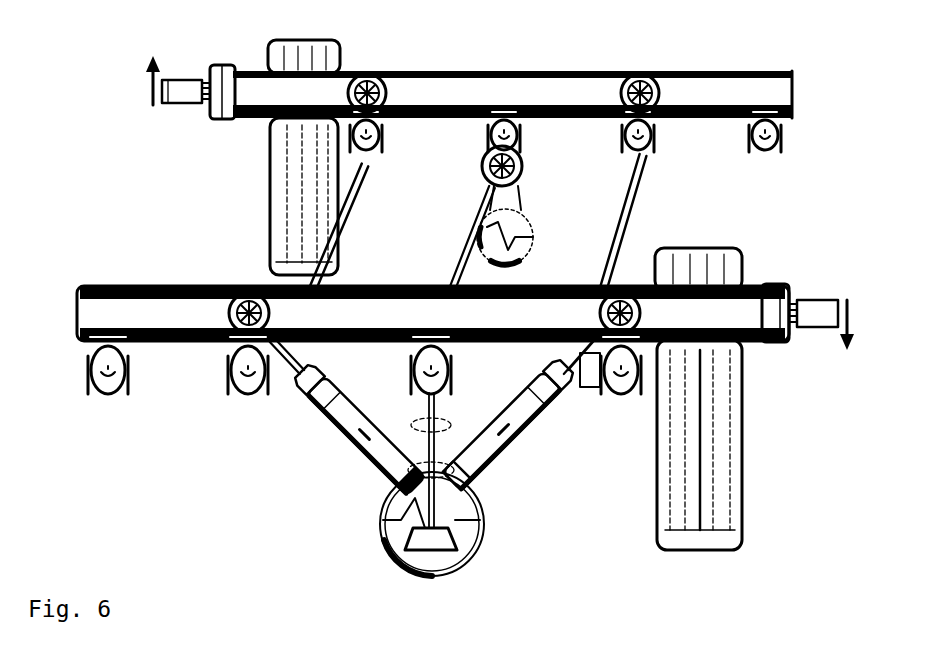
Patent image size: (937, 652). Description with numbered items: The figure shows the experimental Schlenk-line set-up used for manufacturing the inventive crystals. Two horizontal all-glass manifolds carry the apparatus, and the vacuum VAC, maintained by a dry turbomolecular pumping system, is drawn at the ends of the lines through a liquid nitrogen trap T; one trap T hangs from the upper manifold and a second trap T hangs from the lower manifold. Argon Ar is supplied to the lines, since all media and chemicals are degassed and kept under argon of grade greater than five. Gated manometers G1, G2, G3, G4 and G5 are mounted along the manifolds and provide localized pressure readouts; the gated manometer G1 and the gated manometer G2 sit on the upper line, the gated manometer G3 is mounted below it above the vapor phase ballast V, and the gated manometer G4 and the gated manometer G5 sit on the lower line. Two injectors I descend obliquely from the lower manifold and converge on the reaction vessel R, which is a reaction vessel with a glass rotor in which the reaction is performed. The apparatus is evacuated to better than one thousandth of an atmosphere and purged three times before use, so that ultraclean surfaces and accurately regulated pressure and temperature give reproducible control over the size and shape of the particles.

The gated manometer G1 is at (367, 77).
The gated manometer G2 is at (640, 78).
The gated manometer G3 is at (519, 166).
The gated manometer G4 is at (249, 297).
The gated manometer G5 is at (622, 297).
The liquid nitrogen trap T is at (273, 185).
The vapor phase ballast V is at (512, 233).
The argon Ar is at (434, 283).
The vacuum VAC is at (488, 206).
The injector I is at (347, 443).
The reaction vessel with glass rotor R is at (458, 512).